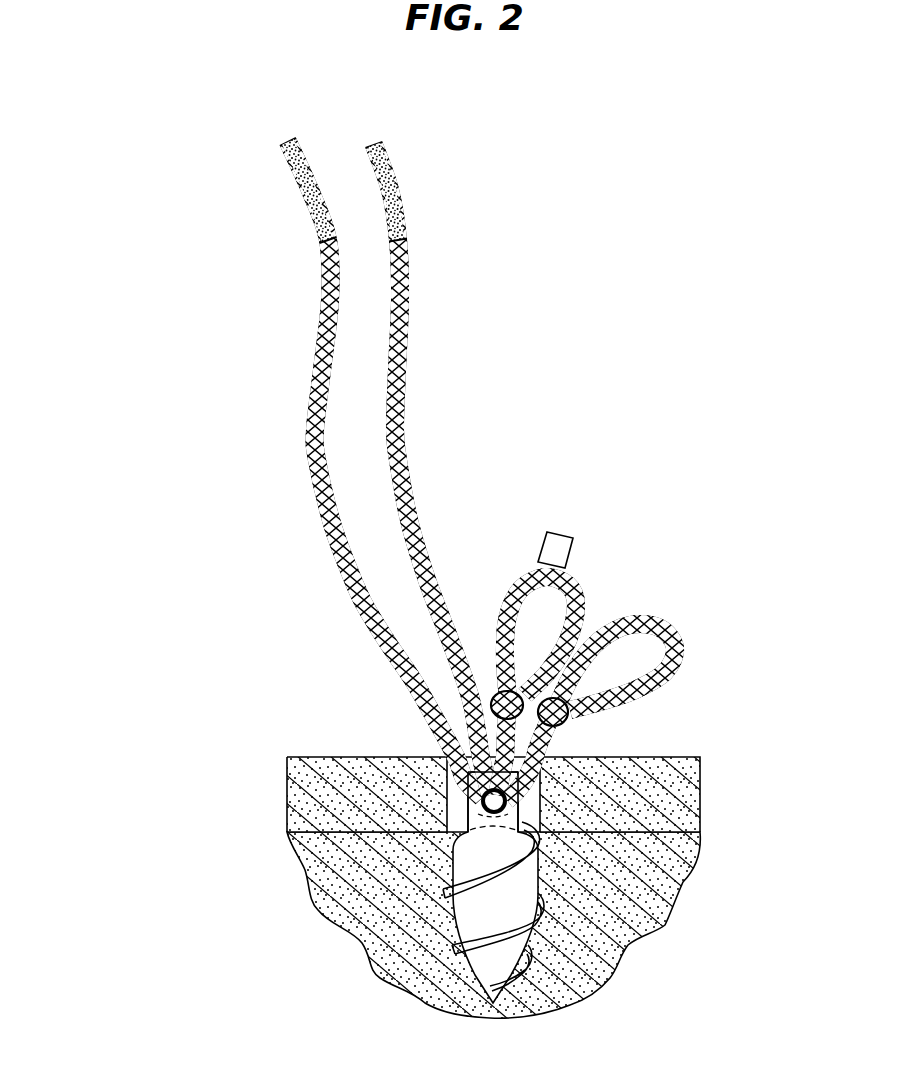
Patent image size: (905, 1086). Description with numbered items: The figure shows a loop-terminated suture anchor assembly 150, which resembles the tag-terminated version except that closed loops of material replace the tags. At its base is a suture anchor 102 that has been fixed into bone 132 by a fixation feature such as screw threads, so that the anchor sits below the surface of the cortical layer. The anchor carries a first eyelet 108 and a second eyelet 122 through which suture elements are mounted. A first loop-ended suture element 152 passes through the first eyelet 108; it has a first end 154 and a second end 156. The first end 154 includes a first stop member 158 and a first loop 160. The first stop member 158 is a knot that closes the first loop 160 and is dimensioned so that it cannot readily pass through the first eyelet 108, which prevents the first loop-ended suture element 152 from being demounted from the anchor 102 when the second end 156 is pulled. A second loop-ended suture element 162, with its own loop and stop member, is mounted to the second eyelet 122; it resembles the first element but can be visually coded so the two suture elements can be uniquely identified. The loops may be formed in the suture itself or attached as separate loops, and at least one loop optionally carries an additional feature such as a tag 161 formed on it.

The suture anchor assembly 150 is at (213, 283).
The first loop-ended suture element 152 is at (405, 440).
The second loop-ended suture element 162 is at (300, 428).
The second end 156 is at (418, 182).
The first end 154 is at (603, 575).
The first stop member 158 is at (497, 690).
The first loop 160 is at (582, 602).
The tag 161 is at (555, 543).
The bone 132 is at (280, 800).
The suture anchor 102 is at (410, 948).
The second eyelet 122 is at (520, 820).
The first eyelet 108 is at (473, 795).